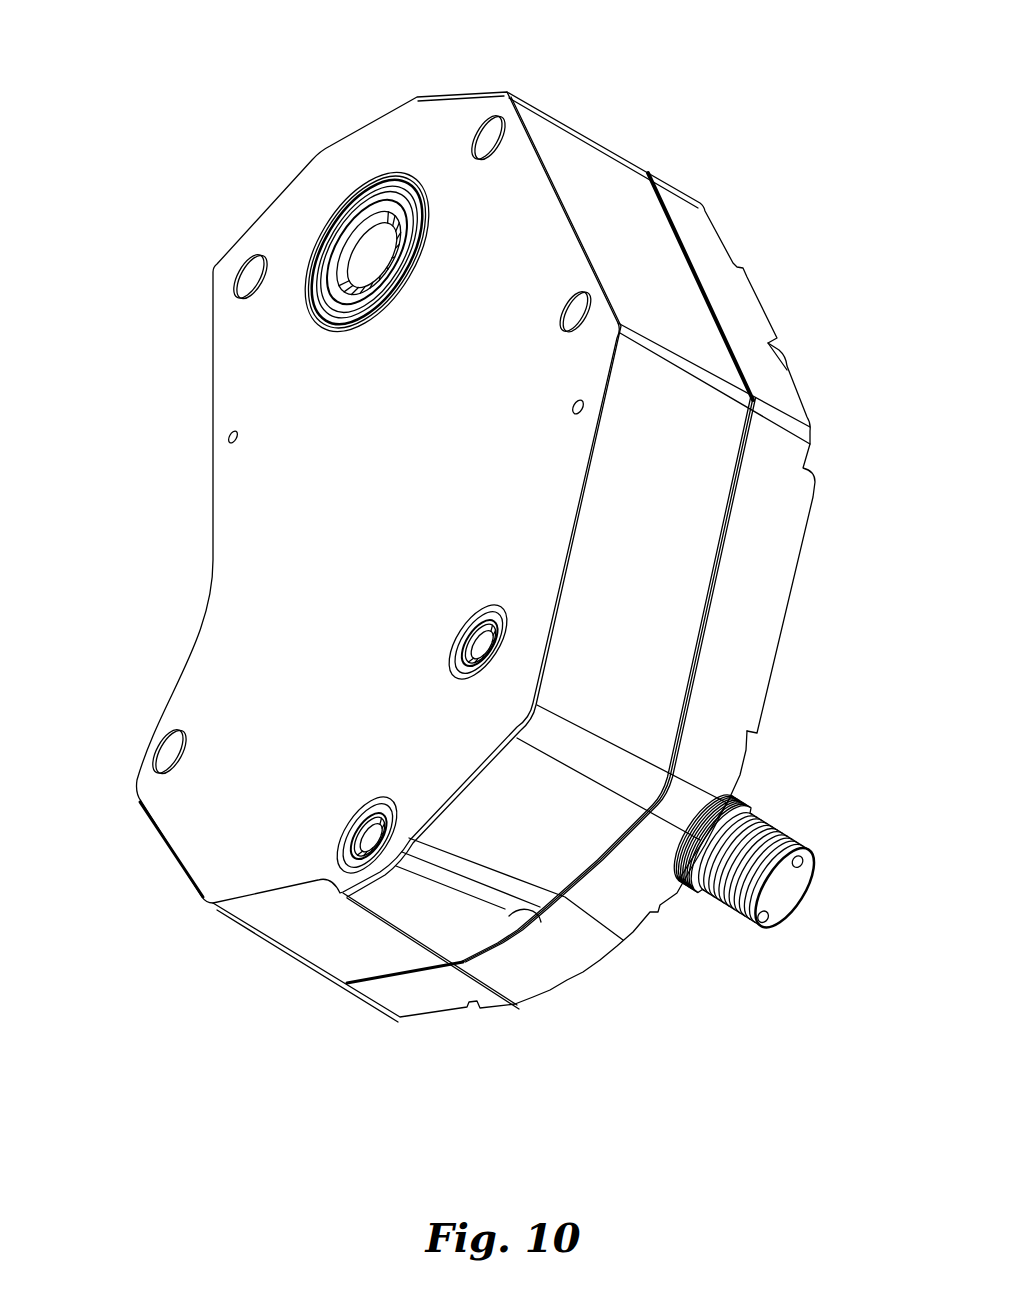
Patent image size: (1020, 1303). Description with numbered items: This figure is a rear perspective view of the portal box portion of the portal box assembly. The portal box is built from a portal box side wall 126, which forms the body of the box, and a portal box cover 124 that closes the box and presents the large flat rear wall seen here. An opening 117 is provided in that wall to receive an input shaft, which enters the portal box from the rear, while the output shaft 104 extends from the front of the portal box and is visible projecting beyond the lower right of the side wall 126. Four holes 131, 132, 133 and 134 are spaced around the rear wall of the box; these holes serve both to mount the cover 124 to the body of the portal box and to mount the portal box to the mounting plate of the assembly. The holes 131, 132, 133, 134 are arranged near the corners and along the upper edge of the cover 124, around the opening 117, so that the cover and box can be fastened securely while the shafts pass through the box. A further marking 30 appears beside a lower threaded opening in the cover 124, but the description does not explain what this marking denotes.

The portal box cover 124 is at (243, 537).
The portal box side wall 126 is at (596, 177).
The opening 117 is at (353, 273).
The hole 131 is at (247, 277).
The hole 132 is at (489, 140).
The hole 133 is at (168, 760).
The hole 134 is at (573, 314).
The output shaft 104 is at (750, 933).
The threaded port 30 is at (367, 821).